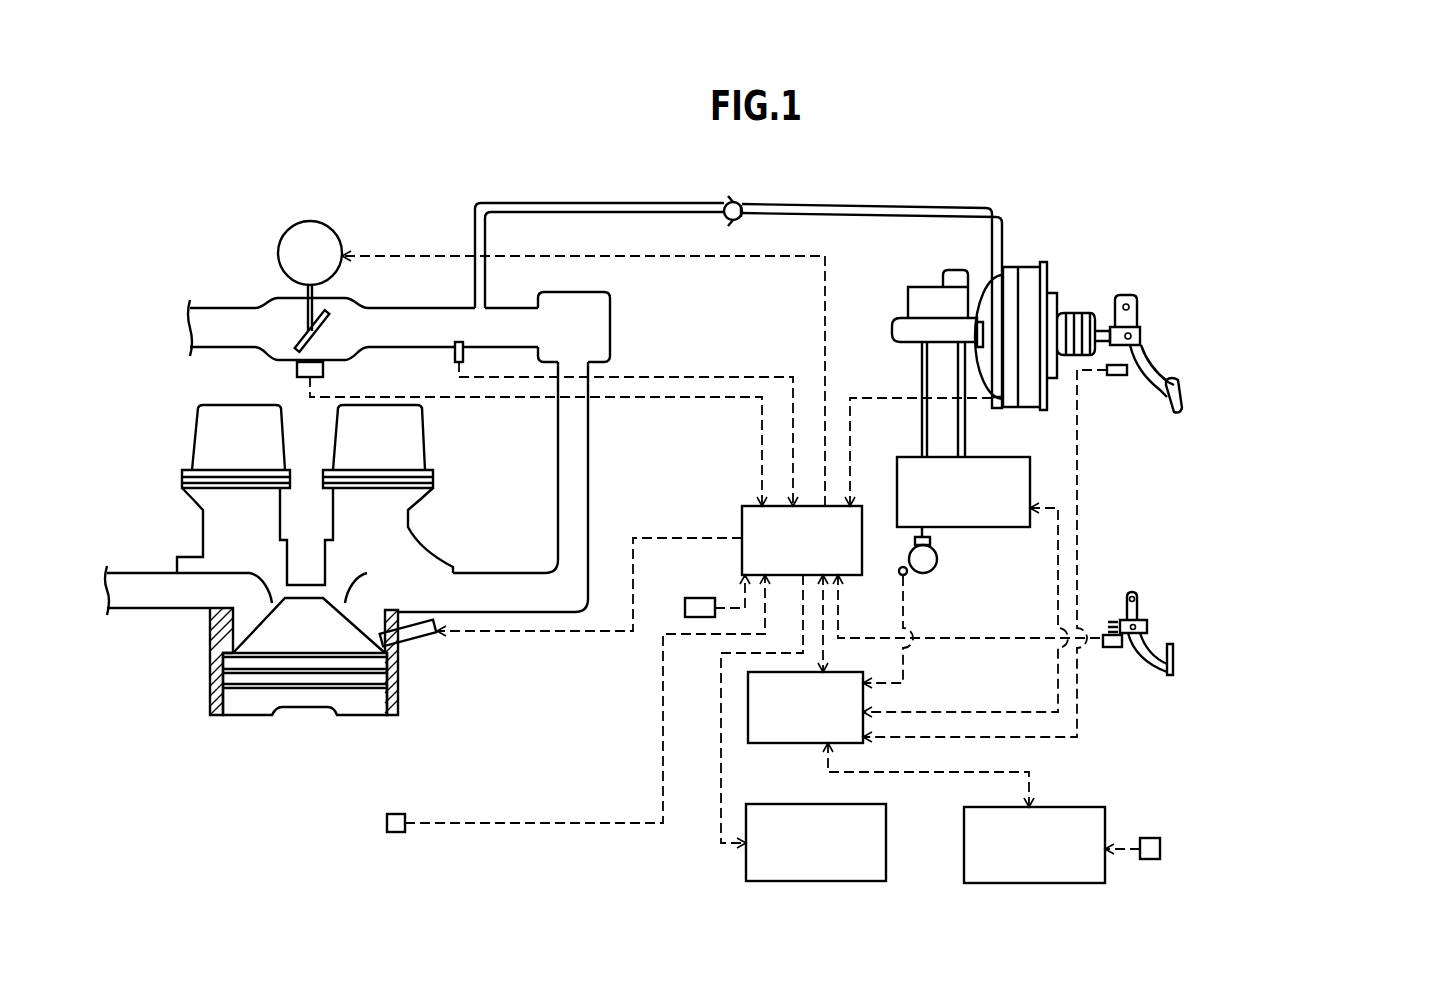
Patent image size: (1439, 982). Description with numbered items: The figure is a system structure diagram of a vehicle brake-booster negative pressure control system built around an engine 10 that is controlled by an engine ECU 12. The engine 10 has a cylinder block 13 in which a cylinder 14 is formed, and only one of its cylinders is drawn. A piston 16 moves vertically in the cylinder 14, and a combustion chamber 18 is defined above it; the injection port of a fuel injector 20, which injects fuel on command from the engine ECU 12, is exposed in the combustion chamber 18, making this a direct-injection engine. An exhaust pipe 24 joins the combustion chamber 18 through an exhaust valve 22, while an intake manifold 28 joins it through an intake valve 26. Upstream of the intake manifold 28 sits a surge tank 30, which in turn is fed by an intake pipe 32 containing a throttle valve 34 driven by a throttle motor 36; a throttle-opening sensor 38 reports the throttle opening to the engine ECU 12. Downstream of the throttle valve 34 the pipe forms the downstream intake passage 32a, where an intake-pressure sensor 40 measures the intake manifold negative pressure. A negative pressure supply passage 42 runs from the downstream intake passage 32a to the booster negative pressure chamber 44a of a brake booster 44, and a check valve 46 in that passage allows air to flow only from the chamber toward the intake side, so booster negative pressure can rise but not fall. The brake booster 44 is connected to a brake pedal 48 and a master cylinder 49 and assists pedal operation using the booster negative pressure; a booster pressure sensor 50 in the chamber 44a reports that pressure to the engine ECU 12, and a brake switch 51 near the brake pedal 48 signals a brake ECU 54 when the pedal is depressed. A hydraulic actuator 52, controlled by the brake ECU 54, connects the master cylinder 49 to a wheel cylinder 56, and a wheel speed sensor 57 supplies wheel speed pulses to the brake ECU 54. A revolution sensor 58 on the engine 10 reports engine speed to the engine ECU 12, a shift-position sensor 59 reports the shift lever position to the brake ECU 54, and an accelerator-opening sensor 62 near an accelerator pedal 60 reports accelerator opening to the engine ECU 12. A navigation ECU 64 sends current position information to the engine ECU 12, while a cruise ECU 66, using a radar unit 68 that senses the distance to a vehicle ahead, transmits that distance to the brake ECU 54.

The engine 10 is at (420, 702).
The engine ECU 12 is at (742, 557).
The cylinder block 13 is at (214, 630).
The cylinder 14 is at (234, 702).
The piston 16 is at (272, 712).
The combustion chamber 18 is at (357, 647).
The fuel injector 20 is at (412, 644).
The exhaust valve 22 is at (283, 597).
The exhaust pipe 24 is at (118, 598).
The intake valve 26 is at (338, 600).
The intake manifold 28 is at (587, 497).
The surge tank 30 is at (611, 328).
The intake pipe 32 is at (228, 348).
The downstream intake passage 32a is at (400, 307).
The throttle valve 34 is at (302, 338).
The throttle motor 36 is at (308, 221).
The throttle-opening sensor 38 is at (296, 372).
The intake-pressure sensor 40 is at (455, 355).
The negative pressure supply passage 42 is at (680, 203).
The brake booster 44 is at (1030, 261).
The booster negative pressure chamber 44a is at (1003, 277).
The check valve 46 is at (746, 205).
The brake pedal 48 is at (1177, 393).
The master cylinder 49 is at (893, 340).
The booster pressure sensor 50 is at (997, 408).
The brake switch 51 is at (1115, 376).
The hydraulic actuator 52 is at (898, 457).
The brake ECU 54 is at (790, 745).
The wheel cylinder 56 is at (935, 545).
The wheel speed sensor 57 is at (907, 575).
The revolution sensor 58 is at (386, 823).
The shift-position sensor 59 is at (686, 610).
The accelerator pedal 60 is at (1173, 648).
The accelerator-opening sensor 62 is at (1112, 648).
The navigation ECU 64 is at (886, 822).
The cruise ECU 66 is at (964, 860).
The radar unit 68 is at (1144, 866).